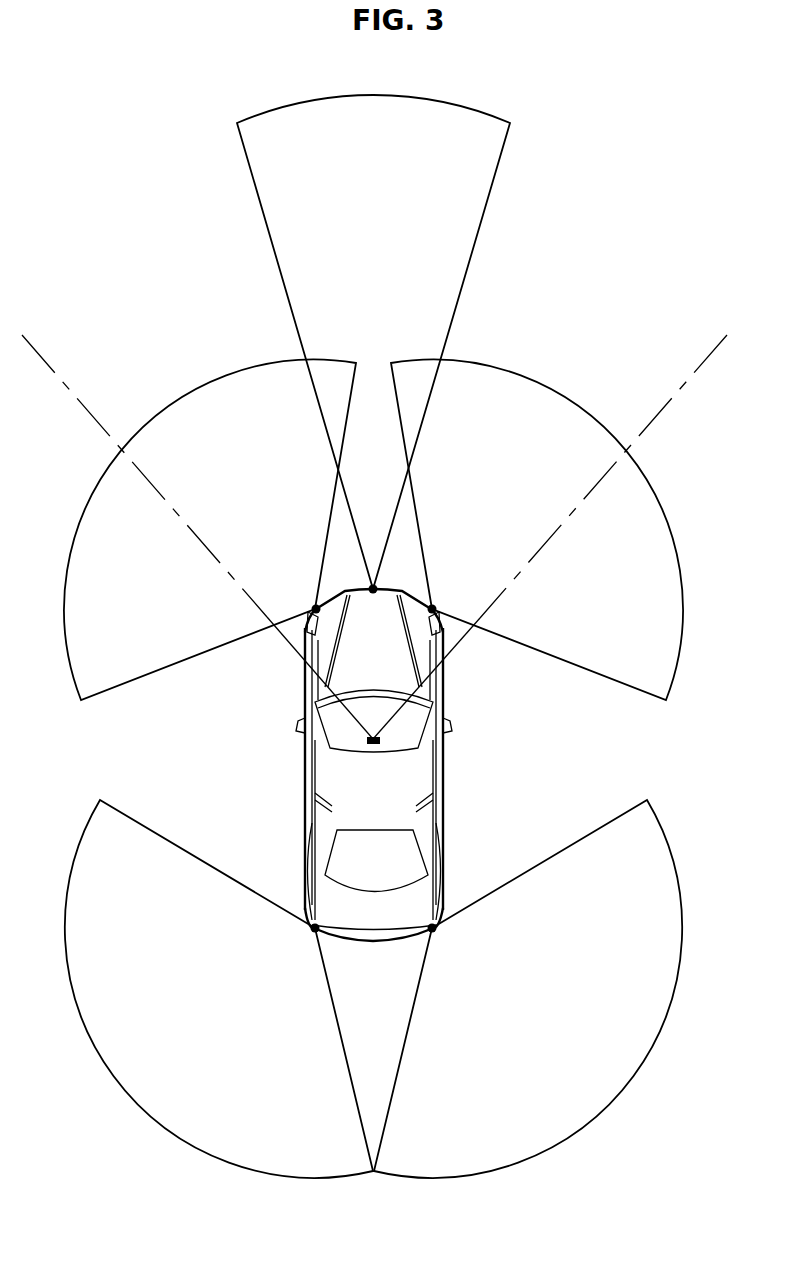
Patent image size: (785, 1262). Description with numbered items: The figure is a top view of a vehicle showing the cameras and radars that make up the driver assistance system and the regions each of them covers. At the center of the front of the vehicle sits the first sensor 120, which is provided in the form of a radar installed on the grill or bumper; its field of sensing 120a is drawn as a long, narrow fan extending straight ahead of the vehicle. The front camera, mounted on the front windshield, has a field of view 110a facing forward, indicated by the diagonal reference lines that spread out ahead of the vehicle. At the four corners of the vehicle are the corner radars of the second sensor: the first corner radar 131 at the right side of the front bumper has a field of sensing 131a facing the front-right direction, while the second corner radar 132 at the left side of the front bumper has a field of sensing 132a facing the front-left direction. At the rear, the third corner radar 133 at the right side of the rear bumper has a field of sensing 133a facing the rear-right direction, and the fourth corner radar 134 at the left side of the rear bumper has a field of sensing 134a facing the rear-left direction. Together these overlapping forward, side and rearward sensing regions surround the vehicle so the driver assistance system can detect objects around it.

The first sensor 120 is at (375, 589).
The field of sensing 120a is at (458, 230).
The first corner radar 131 is at (434, 608).
The field of sensing 131a is at (563, 410).
The second corner radar 132 is at (313, 608).
The field of sensing 132a is at (185, 412).
The third corner radar 133 is at (434, 930).
The field of sensing 133a is at (632, 1062).
The fourth corner radar 134 is at (313, 930).
The field of sensing 134a is at (115, 1062).
The field of view 110a is at (685, 385).